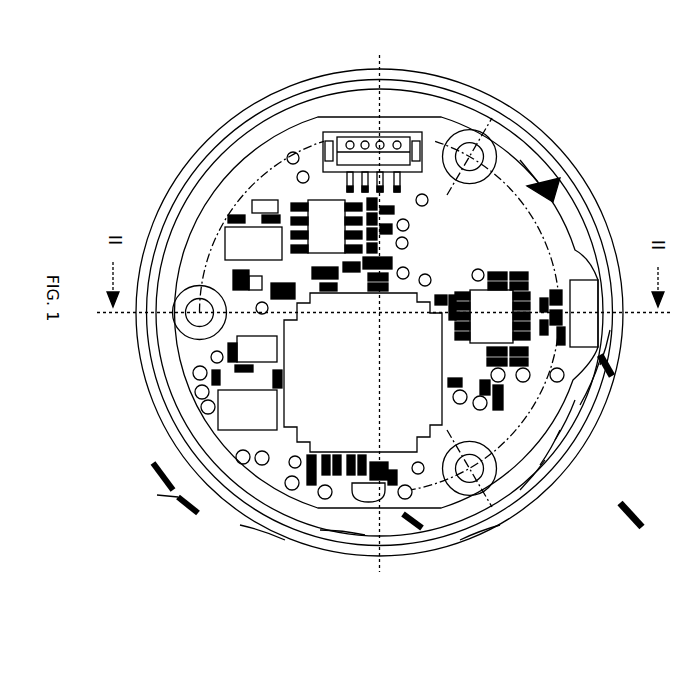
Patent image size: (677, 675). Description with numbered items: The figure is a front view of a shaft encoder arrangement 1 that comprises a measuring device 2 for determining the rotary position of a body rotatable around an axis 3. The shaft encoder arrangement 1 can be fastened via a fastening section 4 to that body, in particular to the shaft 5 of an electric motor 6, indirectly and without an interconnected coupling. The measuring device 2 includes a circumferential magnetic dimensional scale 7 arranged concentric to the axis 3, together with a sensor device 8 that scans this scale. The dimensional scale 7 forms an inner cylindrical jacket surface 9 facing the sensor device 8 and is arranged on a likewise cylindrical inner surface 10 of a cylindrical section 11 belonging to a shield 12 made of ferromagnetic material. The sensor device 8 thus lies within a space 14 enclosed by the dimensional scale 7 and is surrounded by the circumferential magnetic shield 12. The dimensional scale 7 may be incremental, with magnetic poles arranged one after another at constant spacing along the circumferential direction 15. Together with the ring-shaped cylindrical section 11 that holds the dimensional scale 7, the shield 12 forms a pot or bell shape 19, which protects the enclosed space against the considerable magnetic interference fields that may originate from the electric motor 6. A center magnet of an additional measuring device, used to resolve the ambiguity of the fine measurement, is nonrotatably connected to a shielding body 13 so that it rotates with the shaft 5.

The shaft encoder arrangement 1 is at (342, 525).
The measuring device 2 is at (411, 74).
The axis 3 is at (388, 320).
The fastening section 4 is at (562, 148).
The shaft 5 is at (163, 510).
The electric motor 6 is at (358, 312).
The magnetic dimensional scale 7 is at (642, 527).
The sensor device 8 is at (141, 344).
The inner cylindrical jacket surface 9 is at (483, 531).
The cylindrical inner surface 10 is at (262, 512).
The cylindrical section 11 is at (422, 528).
The shield 12 is at (607, 385).
The shielding body 13 is at (568, 422).
The space 14 is at (552, 450).
The circumferential direction 15 is at (538, 480).
The pot or bell shape 19 is at (615, 348).